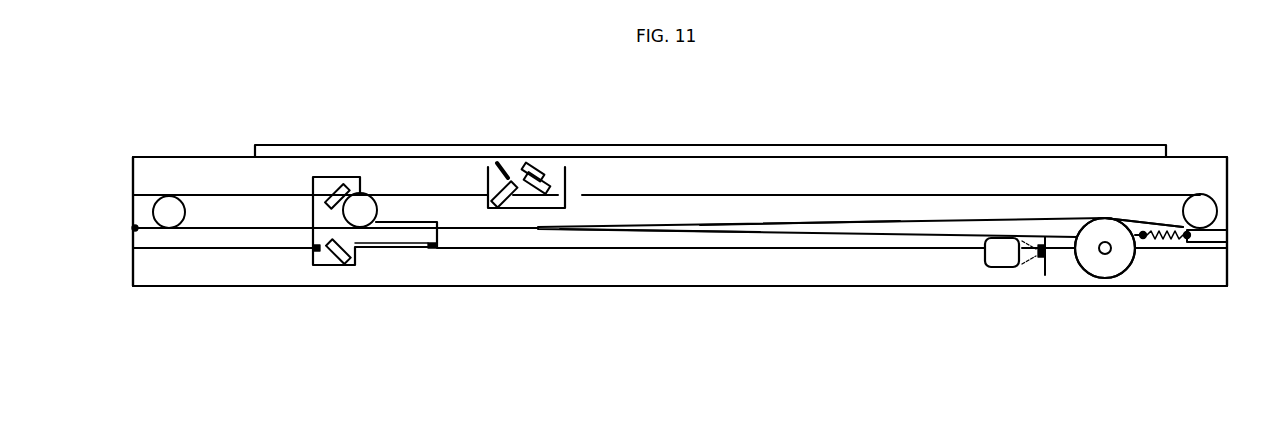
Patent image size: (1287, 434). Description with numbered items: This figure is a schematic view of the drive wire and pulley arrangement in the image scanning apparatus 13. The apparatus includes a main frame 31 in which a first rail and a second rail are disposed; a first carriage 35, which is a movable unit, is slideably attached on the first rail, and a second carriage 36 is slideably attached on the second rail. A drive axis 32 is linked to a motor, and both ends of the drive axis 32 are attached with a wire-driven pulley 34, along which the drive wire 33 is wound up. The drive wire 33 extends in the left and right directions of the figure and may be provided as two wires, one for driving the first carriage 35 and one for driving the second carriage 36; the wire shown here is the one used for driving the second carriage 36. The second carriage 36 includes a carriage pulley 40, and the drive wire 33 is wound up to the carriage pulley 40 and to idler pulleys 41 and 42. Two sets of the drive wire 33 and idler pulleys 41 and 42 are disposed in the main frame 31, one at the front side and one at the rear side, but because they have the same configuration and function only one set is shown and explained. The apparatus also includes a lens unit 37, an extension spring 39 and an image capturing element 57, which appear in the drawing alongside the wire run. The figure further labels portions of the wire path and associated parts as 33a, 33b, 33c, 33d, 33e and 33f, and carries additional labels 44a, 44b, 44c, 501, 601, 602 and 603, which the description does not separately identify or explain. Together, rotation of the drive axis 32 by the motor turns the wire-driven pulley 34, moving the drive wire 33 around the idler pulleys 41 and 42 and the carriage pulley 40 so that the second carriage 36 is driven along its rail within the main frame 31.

The image scanning apparatus 13 is at (886, 137).
The main frame 31 is at (157, 157).
The drive axis 32 is at (1105, 256).
The drive wire 33 is at (649, 193).
The belt portion 33a is at (767, 226).
The belt portion 33b is at (208, 195).
The belt portion 33c is at (206, 229).
The belt portion 33d is at (1160, 228).
The belt upper surface 33e is at (714, 195).
The belt lower portion 33f is at (640, 233).
The wire-driven pulley 34 is at (1132, 268).
The first carriage 35 is at (567, 186).
The second carriage 36 is at (313, 184).
The lens unit 37 is at (985, 262).
The extension spring 39 is at (1166, 241).
The carriage pulley 40 is at (378, 210).
The idler pulley 41 is at (186, 212).
The idler pulley 42 is at (1218, 211).
The guide member 44a is at (510, 206).
The guide member 44b is at (336, 184).
The guide member 44c is at (336, 265).
The image capturing element 57 is at (1040, 275).
The detection unit 501 is at (536, 166).
The support plate 601 is at (778, 145).
The sensor 602 is at (544, 178).
The reflector 603 is at (500, 160).